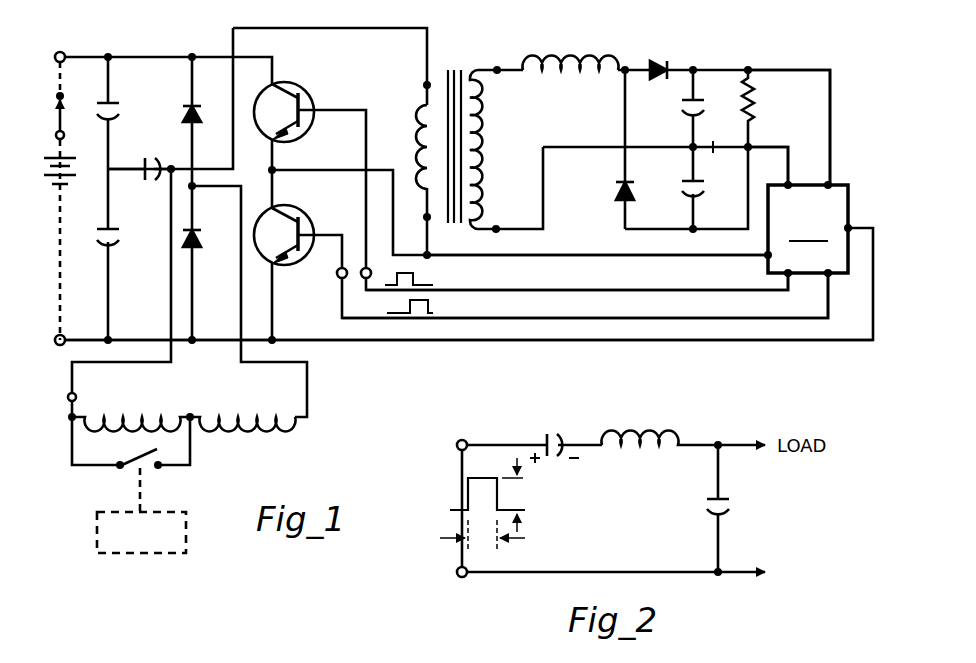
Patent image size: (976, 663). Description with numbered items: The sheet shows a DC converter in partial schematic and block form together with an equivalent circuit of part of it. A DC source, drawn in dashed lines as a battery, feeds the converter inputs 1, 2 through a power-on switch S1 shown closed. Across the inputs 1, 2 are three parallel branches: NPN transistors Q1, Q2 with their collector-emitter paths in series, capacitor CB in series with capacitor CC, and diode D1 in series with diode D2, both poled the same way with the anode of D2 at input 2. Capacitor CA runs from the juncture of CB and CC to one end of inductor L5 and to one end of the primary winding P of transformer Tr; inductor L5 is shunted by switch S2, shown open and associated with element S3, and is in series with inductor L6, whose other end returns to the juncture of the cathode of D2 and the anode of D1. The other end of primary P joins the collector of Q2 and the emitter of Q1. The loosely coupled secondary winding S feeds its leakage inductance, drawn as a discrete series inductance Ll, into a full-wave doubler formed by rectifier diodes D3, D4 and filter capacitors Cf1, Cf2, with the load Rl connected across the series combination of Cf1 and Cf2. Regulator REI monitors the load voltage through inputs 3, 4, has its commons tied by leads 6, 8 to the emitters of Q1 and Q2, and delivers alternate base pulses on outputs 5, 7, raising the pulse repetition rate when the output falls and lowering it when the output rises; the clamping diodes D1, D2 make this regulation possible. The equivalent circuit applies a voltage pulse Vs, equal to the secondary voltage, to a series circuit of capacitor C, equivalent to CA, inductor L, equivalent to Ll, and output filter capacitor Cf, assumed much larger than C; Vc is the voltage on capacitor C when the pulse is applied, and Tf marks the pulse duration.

In FIG. 1, the converter input 1 is at (54, 58).
In FIG. 1, the converter input 2 is at (54, 338).
In FIG. 1, the regulator input 3 is at (791, 180).
In FIG. 1, the regulator input 4 is at (832, 180).
In FIG. 1, the regulator output 5 is at (749, 288).
In FIG. 1, the common lead 6 is at (745, 255).
In FIG. 1, the regulator output 7 is at (764, 320).
In FIG. 1, the common lead 8 is at (784, 340).
In FIG. 1, the power-on switch S1 is at (54, 124).
In FIG. 1, the switch S2 is at (138, 457).
In FIG. 1, the element S3 is at (157, 512).
In FIG. 1, the capacitor CB is at (118, 118).
In FIG. 1, the capacitor CC is at (112, 246).
In FIG. 1, the capacitor CA is at (152, 182).
In FIG. 1, the diode D1 is at (206, 121).
In FIG. 1, the diode D2 is at (200, 243).
In FIG. 1, the rectifier diode D3 is at (659, 64).
In FIG. 1, the rectifier diode D4 is at (634, 195).
In FIG. 1, the transistor Q1 is at (310, 100).
In FIG. 1, the transistor Q2 is at (312, 223).
In FIG. 1, the transformer Tr is at (450, 133).
In FIG. 1, the primary winding P is at (417, 134).
In FIG. 1, the secondary winding S is at (485, 142).
In FIG. 1, the leakage inductance Ll is at (567, 58).
In FIG. 1, the filter capacitor Cf1 is at (681, 114).
In FIG. 1, the filter capacitor Cf2 is at (704, 185).
In FIG. 1, the load Rl is at (754, 109).
In FIG. 1, the regulator REI is at (831, 229).
In FIG. 1, the inductor L5 is at (126, 412).
In FIG. 1, the inductor L6 is at (250, 411).
In FIG. 2, the capacitor C is at (556, 438).
In FIG. 2, the inductor L is at (639, 438).
In FIG. 2, the output filter capacitor Cf is at (730, 512).
In FIG. 2, the capacitor voltage Vc is at (554, 472).
In FIG. 2, the voltage pulse Vs is at (490, 495).
In FIG. 2, the pulse duration Tf is at (482, 539).